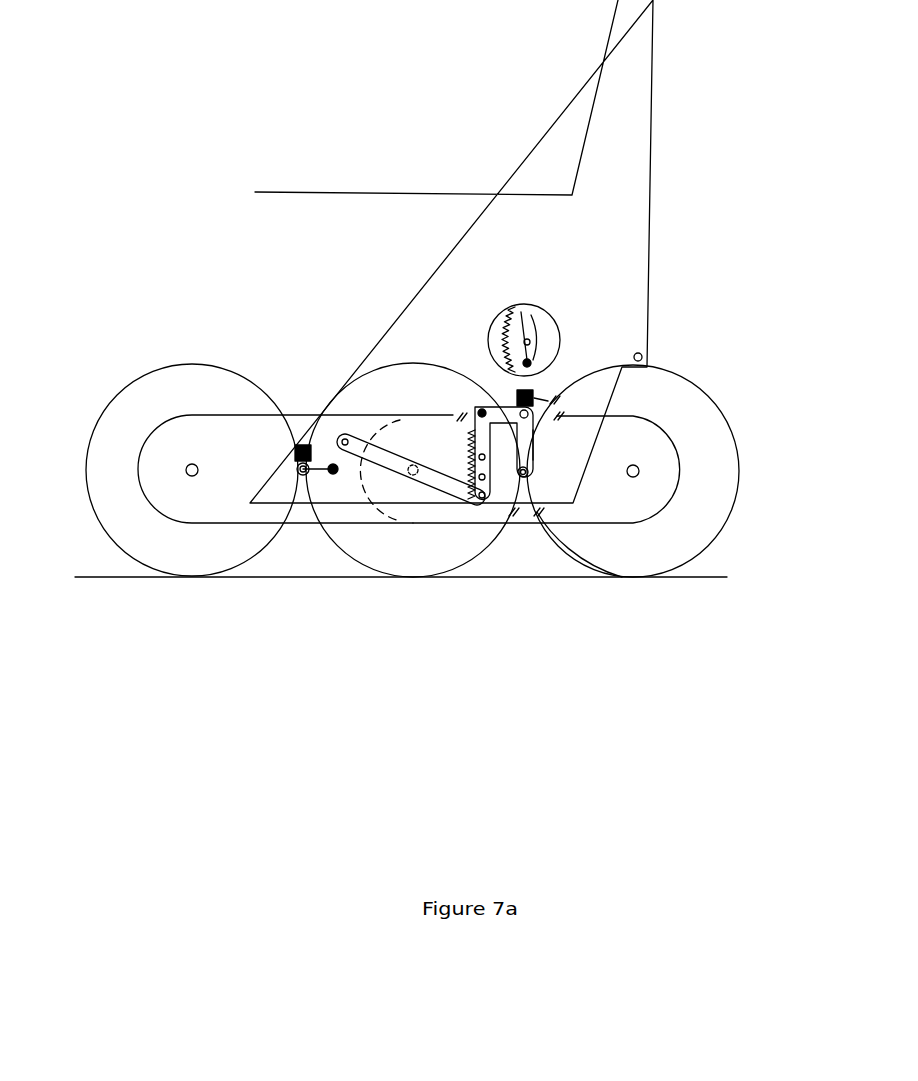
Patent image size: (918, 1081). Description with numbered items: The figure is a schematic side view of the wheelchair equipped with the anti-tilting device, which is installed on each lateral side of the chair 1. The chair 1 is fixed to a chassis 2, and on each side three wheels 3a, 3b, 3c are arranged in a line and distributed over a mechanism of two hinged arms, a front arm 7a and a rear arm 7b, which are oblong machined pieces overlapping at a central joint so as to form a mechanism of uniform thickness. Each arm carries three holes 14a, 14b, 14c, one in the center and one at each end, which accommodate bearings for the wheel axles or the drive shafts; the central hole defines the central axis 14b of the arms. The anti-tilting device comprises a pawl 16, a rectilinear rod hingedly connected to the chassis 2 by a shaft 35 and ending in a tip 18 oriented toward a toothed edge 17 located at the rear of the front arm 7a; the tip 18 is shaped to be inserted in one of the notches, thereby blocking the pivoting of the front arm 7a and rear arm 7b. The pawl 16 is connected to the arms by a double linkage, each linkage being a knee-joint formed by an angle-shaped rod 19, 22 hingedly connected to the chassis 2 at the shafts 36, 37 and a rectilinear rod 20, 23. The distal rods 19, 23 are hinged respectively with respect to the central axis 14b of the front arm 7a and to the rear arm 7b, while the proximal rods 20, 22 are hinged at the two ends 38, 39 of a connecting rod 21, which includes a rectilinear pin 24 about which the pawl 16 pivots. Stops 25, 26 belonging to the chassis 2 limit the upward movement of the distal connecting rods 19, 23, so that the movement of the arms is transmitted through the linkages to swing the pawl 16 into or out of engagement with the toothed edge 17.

The chair 1 is at (457, 97).
The chassis 2 is at (248, 287).
The wheel 3a is at (127, 563).
The wheel 3b is at (350, 562).
The wheel 3c is at (733, 530).
The front arm 7a is at (169, 414).
The rear arm 7b is at (663, 418).
The hole 14a is at (192, 480).
The central axis 14b is at (303, 479).
The hole 14c is at (413, 479).
The pawl 16 is at (538, 321).
The toothed edge 17 is at (460, 442).
The tip 18 is at (524, 313).
The angle-shaped rod 19 is at (322, 459).
The rectilinear rod 20 is at (397, 447).
The connecting rod 21 is at (477, 503).
The angle-shaped rod 22 is at (505, 401).
The rectilinear rod 23 is at (536, 447).
The rectilinear pin 24 is at (440, 460).
The stop 25 is at (303, 443).
The stop 26 is at (537, 392).
The shaft 35 is at (536, 363).
The shaft 36 is at (333, 477).
The shaft 37 is at (476, 412).
The end of connecting rod 38 is at (489, 476).
The end of connecting rod 39 is at (489, 457).